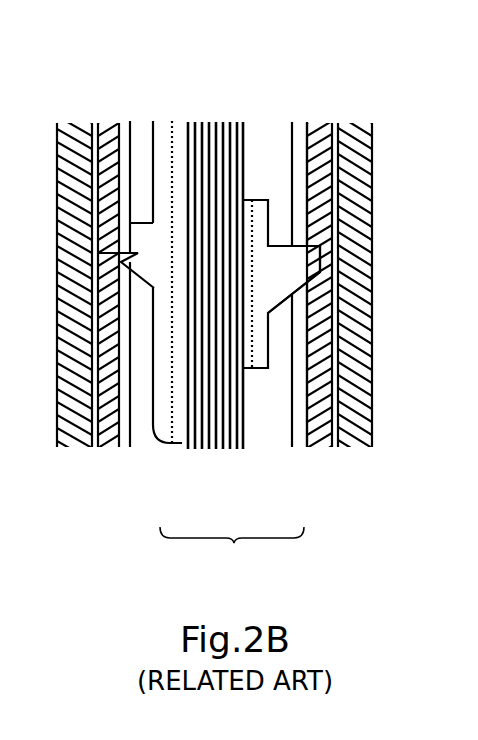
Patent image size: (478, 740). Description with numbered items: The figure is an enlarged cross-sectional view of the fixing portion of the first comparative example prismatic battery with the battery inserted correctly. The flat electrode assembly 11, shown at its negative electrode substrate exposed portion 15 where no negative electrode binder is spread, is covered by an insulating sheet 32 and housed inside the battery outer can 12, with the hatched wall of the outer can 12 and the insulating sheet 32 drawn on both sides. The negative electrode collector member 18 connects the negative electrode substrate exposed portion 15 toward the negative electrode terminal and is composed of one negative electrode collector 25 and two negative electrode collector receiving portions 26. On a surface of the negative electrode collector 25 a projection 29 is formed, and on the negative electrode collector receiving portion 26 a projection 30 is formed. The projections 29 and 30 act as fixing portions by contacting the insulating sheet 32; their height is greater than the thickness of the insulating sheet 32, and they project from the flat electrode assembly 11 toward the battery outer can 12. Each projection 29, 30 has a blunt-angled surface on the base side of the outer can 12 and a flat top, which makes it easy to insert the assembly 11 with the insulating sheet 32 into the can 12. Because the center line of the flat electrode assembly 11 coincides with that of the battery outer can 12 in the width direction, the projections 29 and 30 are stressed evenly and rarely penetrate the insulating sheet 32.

The flat electrode assembly 11 is at (258, 175).
The battery outer can 12 is at (85, 432).
The negative electrode substrate exposed portion 15 is at (215, 122).
The negative electrode collector member 18 is at (232, 549).
The negative electrode collector 25 is at (175, 445).
The negative electrode collector receiving portion 26 is at (248, 370).
The projection 29 is at (108, 263).
The projection 30 is at (300, 271).
The insulating sheet 32 is at (112, 152).